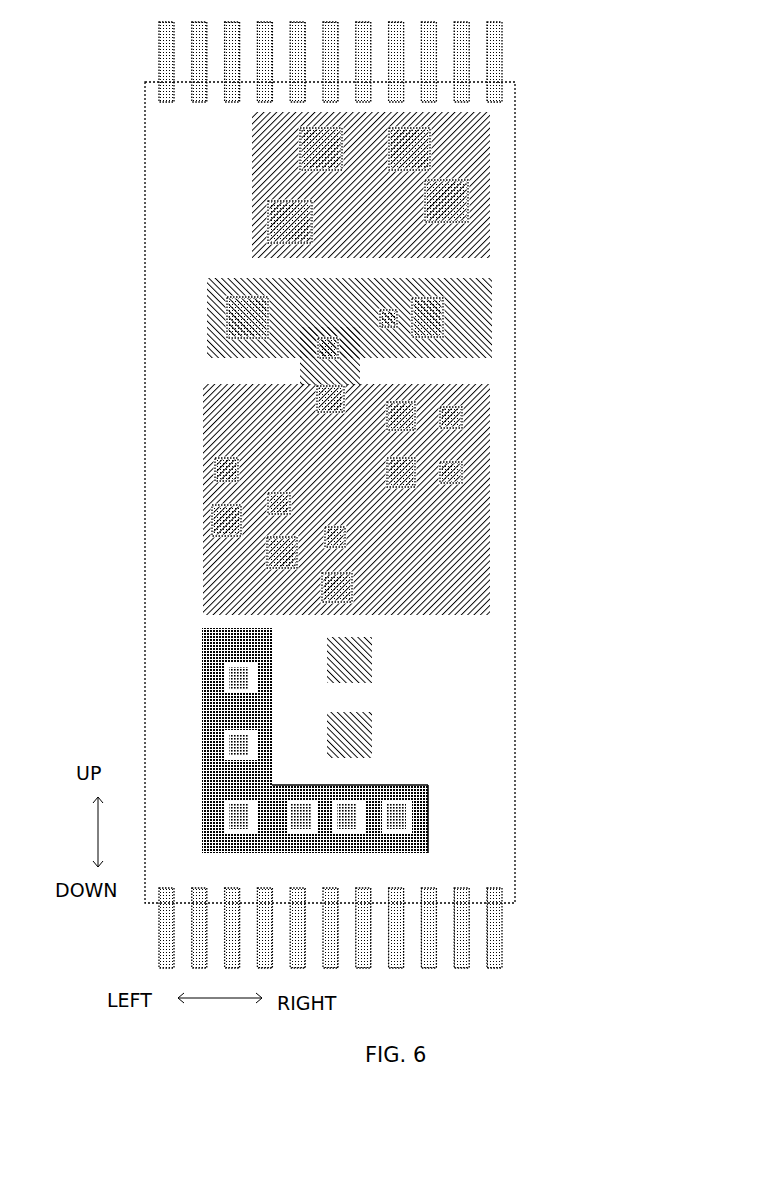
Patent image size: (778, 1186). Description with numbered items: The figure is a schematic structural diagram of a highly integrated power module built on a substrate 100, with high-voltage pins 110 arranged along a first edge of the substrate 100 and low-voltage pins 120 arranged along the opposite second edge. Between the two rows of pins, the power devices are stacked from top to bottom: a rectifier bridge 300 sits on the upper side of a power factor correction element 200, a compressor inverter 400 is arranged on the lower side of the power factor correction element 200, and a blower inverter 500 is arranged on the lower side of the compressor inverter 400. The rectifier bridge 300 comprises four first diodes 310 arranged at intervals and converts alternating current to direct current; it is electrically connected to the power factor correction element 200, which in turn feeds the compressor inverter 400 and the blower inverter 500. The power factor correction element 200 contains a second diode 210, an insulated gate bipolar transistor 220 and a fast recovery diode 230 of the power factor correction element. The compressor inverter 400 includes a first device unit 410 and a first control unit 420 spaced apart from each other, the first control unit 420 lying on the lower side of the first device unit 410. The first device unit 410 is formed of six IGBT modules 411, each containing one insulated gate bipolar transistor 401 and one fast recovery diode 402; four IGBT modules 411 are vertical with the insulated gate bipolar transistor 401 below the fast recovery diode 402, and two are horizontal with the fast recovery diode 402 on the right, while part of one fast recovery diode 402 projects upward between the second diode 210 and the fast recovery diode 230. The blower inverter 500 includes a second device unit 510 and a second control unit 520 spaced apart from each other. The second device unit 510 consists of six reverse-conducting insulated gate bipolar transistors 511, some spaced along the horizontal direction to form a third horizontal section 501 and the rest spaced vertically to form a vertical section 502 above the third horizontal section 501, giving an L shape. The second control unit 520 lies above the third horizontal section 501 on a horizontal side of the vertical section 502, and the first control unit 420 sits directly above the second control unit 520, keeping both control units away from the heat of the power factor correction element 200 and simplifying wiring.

The substrate 100 is at (500, 128).
The high-voltage pins 110 is at (500, 57).
The low-voltage pins 120 is at (503, 943).
The power factor correction element 200 is at (333, 320).
The second diode 210 is at (248, 318).
The insulated gate bipolar transistor of the power factor correction element 220 is at (495, 353).
The fast recovery diode of the power factor correction element 230 is at (407, 363).
The rectifier bridge 300 is at (325, 185).
The first diodes 310 is at (320, 150).
The compressor inverter 400 is at (365, 533).
The insulated gate bipolar transistor 401 is at (333, 499).
The fast recovery diode 402 is at (263, 356).
The first device unit 410 is at (490, 583).
The IGBT modules 411 is at (490, 485).
The first control unit 420 is at (372, 660).
The blower inverter 500 is at (406, 758).
The third horizontal section 501 is at (415, 858).
The vertical section 502 is at (190, 657).
The second device unit 510 is at (430, 822).
The reverse-conducting insulated gate bipolar transistors 511 is at (428, 795).
The second control unit 520 is at (372, 735).